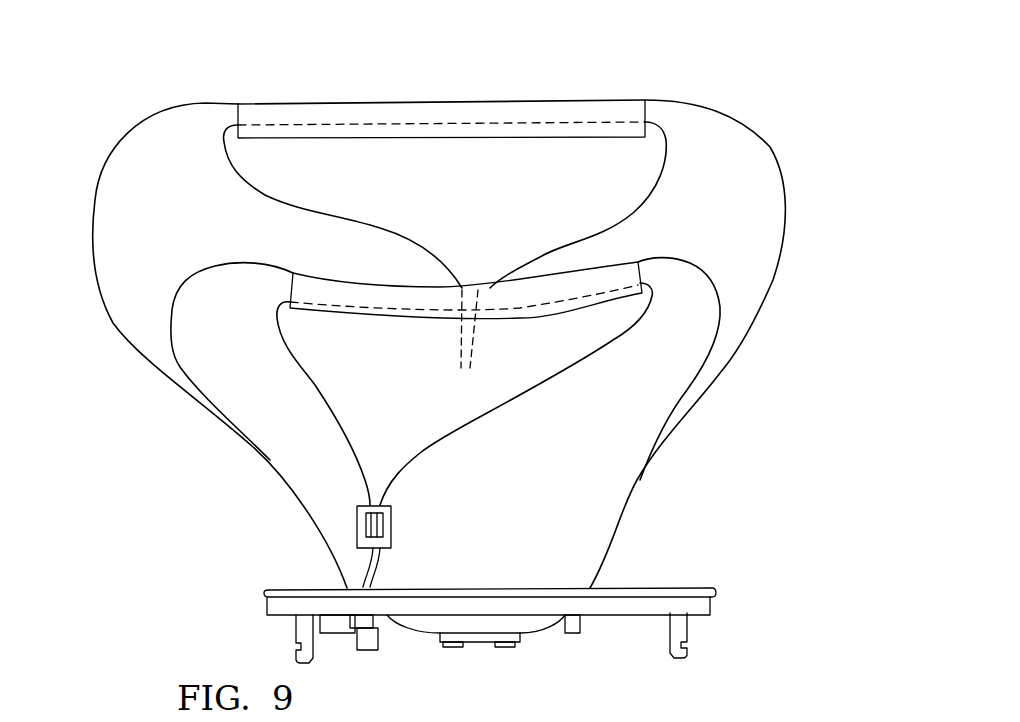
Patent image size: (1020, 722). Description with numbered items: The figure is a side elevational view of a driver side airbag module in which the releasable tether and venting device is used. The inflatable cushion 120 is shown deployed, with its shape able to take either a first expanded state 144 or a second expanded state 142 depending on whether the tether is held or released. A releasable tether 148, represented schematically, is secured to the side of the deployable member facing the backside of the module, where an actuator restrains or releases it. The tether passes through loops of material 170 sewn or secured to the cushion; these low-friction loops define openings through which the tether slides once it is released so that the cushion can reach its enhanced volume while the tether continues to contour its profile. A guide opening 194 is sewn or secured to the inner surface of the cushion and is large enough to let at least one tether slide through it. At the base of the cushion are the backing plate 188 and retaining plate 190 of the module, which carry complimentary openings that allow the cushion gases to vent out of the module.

The inflatable cushion 120 is at (673, 420).
The second expanded state 142 is at (718, 287).
The first expanded state 144 is at (728, 102).
The releasable tether 148 is at (517, 397).
The loop of material 170 is at (597, 108).
The backing plate 188 is at (491, 667).
The retaining plate 190 is at (407, 721).
The guide opening 194 is at (360, 523).